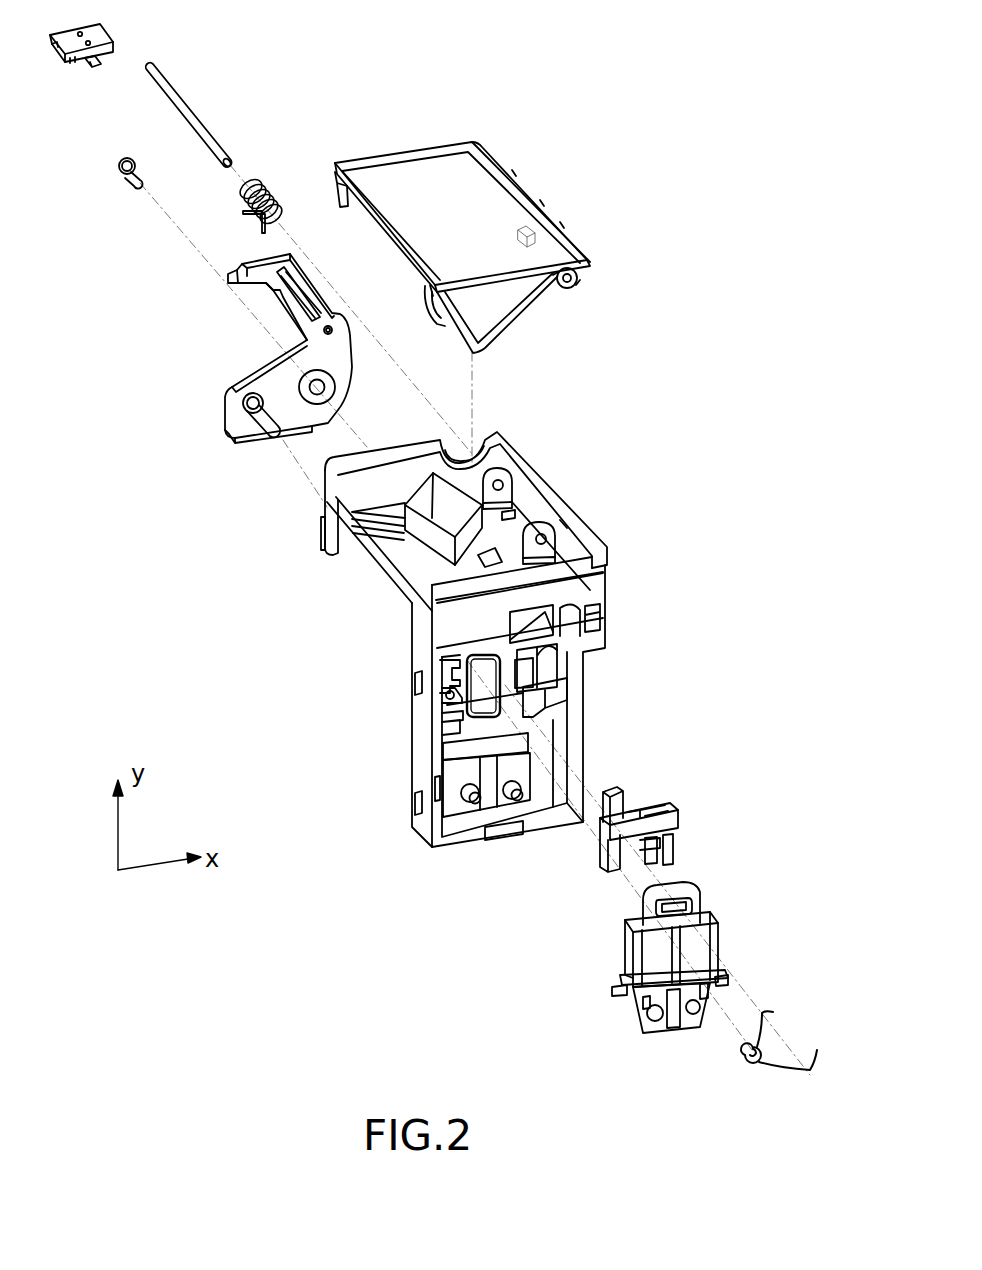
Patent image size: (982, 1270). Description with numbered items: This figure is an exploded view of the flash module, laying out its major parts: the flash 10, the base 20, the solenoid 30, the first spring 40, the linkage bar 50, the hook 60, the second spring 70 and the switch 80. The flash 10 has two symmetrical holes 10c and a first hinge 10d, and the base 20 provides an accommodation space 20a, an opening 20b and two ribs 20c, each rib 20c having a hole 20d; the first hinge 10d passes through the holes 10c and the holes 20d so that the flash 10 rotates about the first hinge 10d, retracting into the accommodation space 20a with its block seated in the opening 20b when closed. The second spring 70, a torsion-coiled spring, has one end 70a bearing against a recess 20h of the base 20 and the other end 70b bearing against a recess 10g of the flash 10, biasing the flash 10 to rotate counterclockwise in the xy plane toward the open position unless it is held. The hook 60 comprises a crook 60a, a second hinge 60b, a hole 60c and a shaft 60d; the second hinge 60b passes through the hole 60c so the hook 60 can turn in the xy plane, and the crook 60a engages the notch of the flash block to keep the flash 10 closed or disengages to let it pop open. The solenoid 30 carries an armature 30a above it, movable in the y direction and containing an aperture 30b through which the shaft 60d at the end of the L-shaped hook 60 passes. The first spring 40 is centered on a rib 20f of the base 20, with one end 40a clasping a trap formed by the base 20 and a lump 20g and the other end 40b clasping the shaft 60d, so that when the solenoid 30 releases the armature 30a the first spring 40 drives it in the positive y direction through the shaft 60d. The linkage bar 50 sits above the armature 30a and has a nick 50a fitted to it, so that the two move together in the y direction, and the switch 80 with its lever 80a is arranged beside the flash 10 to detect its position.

The flash 10 is at (500, 247).
The holes 10c is at (583, 286).
The first hinge 10d is at (170, 87).
The recess 10g is at (523, 230).
The base 20 is at (468, 632).
The accommodation space 20a is at (338, 520).
The opening 20b is at (425, 512).
The ribs 20c is at (522, 522).
The hole 20d is at (546, 540).
The rib 20f is at (447, 694).
The lump 20g is at (441, 667).
The recess 20h is at (497, 480).
The solenoid 30 is at (688, 944).
The armature 30a is at (694, 898).
The aperture 30b is at (714, 925).
The first spring 40 is at (775, 1038).
The end 40a is at (765, 1005).
The end 40b is at (818, 1052).
The linkage bar 50 is at (674, 817).
The nick 50a is at (674, 851).
The hook 60 is at (252, 340).
The crook 60a is at (236, 274).
The second hinge 60b is at (131, 185).
The hole 60c is at (303, 389).
The shaft 60d is at (263, 433).
The second spring 70 is at (270, 175).
The end 70a is at (270, 223).
The end 70b is at (256, 211).
The switch 80 is at (70, 77).
The lever 80a is at (98, 63).